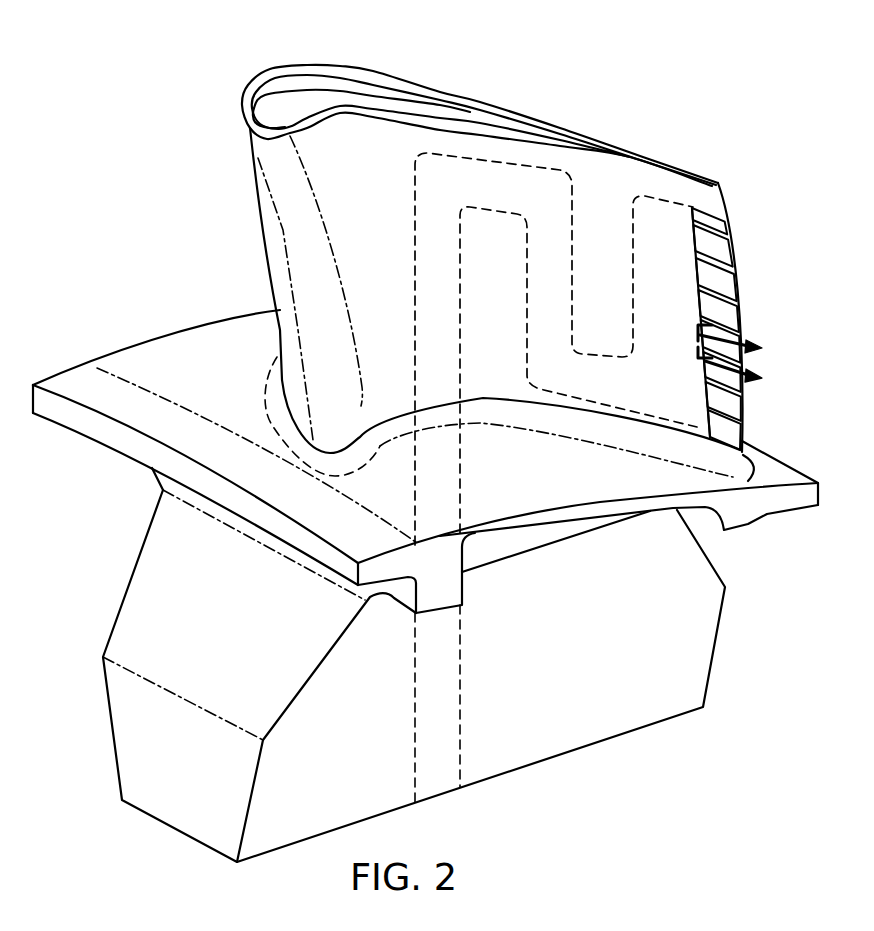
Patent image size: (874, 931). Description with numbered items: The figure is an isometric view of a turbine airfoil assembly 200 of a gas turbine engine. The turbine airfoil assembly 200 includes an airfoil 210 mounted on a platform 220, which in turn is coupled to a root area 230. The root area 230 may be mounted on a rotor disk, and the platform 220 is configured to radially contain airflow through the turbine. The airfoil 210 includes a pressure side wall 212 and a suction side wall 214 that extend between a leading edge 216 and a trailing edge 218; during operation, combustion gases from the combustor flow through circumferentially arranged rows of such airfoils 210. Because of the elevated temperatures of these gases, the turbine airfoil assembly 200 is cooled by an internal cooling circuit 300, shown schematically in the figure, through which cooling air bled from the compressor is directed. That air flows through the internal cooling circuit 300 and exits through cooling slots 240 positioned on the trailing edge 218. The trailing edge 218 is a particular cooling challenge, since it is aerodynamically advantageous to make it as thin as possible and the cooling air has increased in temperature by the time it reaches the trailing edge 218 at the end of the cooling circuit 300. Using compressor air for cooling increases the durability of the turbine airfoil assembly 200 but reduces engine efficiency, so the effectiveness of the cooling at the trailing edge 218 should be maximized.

The turbine airfoil assembly 200 is at (718, 146).
The airfoil 210 is at (613, 200).
The pressure side wall 212 is at (367, 137).
The suction side wall 214 is at (243, 95).
The leading edge 216 is at (280, 192).
The trailing edge 218 is at (719, 205).
The platform 220 is at (142, 352).
The root area 230 is at (277, 360).
The cooling slots 240 is at (731, 252).
The internal cooling circuit 300 is at (497, 150).